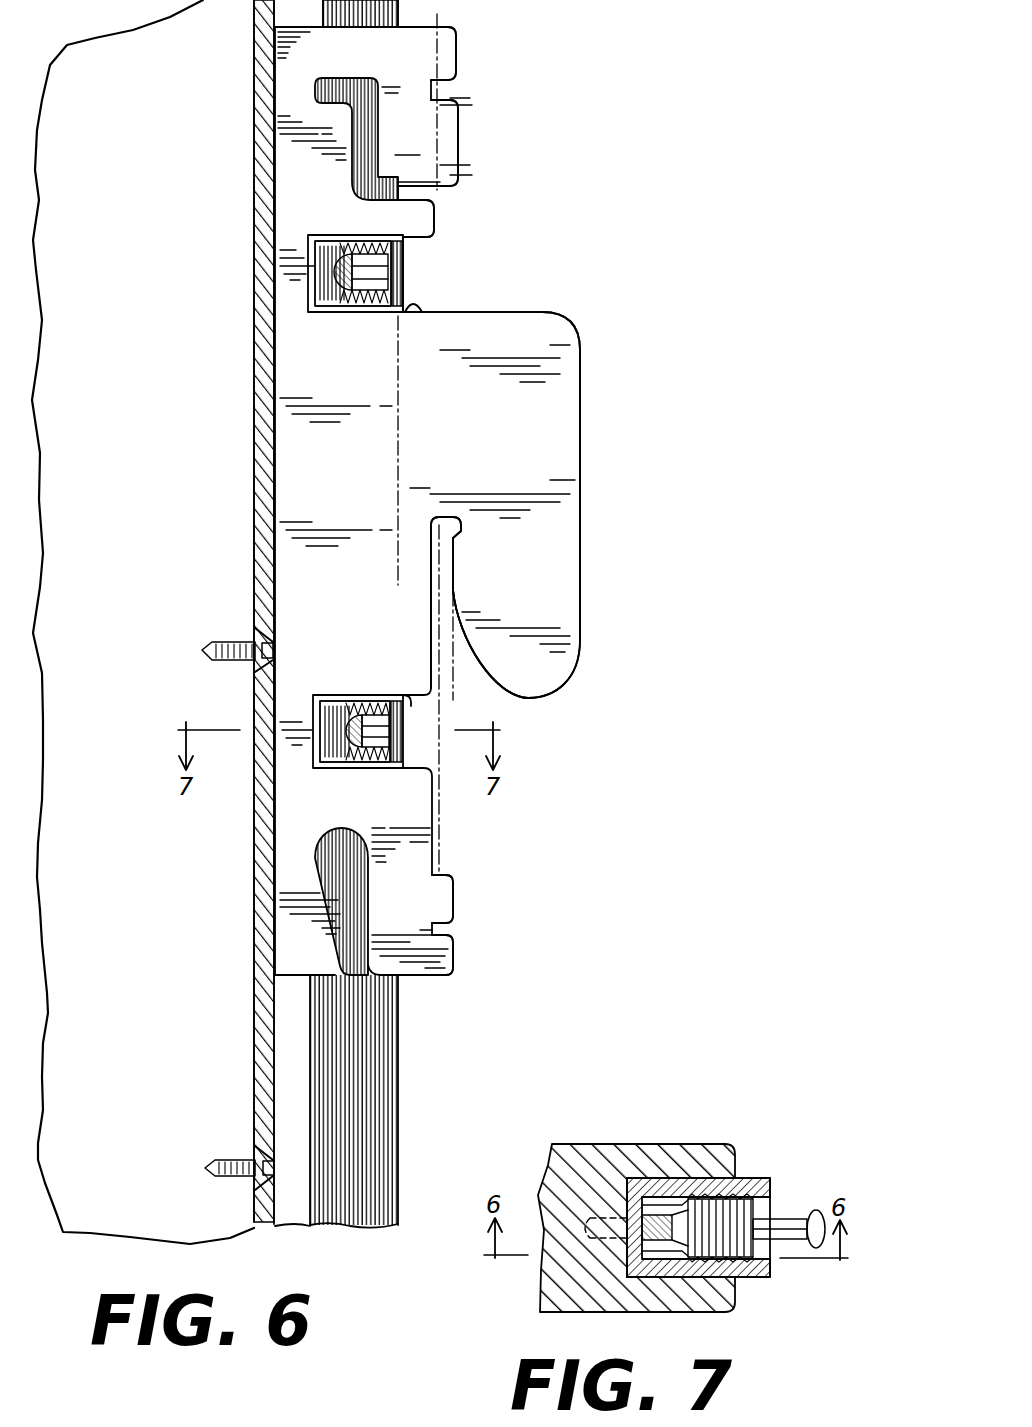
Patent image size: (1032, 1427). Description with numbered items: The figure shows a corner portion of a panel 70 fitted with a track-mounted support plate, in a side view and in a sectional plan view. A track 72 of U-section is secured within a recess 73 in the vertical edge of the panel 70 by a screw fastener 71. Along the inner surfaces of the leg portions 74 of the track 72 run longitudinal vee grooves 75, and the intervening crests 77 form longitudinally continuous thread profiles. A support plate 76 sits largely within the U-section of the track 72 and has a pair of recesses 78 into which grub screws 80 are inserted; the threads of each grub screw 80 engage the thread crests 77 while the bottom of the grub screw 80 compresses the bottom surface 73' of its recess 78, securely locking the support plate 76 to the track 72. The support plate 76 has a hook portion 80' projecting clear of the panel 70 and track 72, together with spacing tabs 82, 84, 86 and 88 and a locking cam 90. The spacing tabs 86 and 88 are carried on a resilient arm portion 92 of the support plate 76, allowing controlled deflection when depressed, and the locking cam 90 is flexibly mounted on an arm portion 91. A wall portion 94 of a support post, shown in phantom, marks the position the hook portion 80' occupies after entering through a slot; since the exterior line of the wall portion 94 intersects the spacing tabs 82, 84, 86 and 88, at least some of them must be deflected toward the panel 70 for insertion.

In FIG. 6, the panel 70 is at (212, 1216).
In FIG. 7, the panel 70 is at (560, 1312).
In FIG. 6, the screw fastener 71 is at (268, 636).
In FIG. 7, the track 72 is at (772, 1157).
In FIG. 7, the recess 73 is at (683, 1262).
In FIG. 6, the bottom surface of recess 73' is at (340, 501).
In FIG. 7, the leg portions 74 is at (748, 1280).
In FIG. 7, the vee grooves 75 is at (775, 1258).
In FIG. 6, the support plate 76 is at (350, 478).
In FIG. 7, the crests 77 is at (770, 1202).
In FIG. 6, the recesses 78 is at (412, 318).
In FIG. 6, the grub screws 80 is at (361, 496).
In FIG. 6, the hook portion 80' is at (491, 505).
In FIG. 6, the spacing tab 82 is at (462, 55).
In FIG. 6, the spacing tab 84 is at (438, 226).
In FIG. 6, the spacing tab 86 is at (452, 900).
In FIG. 6, the spacing tab 88 is at (454, 970).
In FIG. 6, the locking cam 90 is at (460, 146).
In FIG. 6, the arm portion 91 is at (420, 146).
In FIG. 6, the resilient arm portion 92 is at (416, 894).
In FIG. 6, the wall portion 94 is at (490, 659).